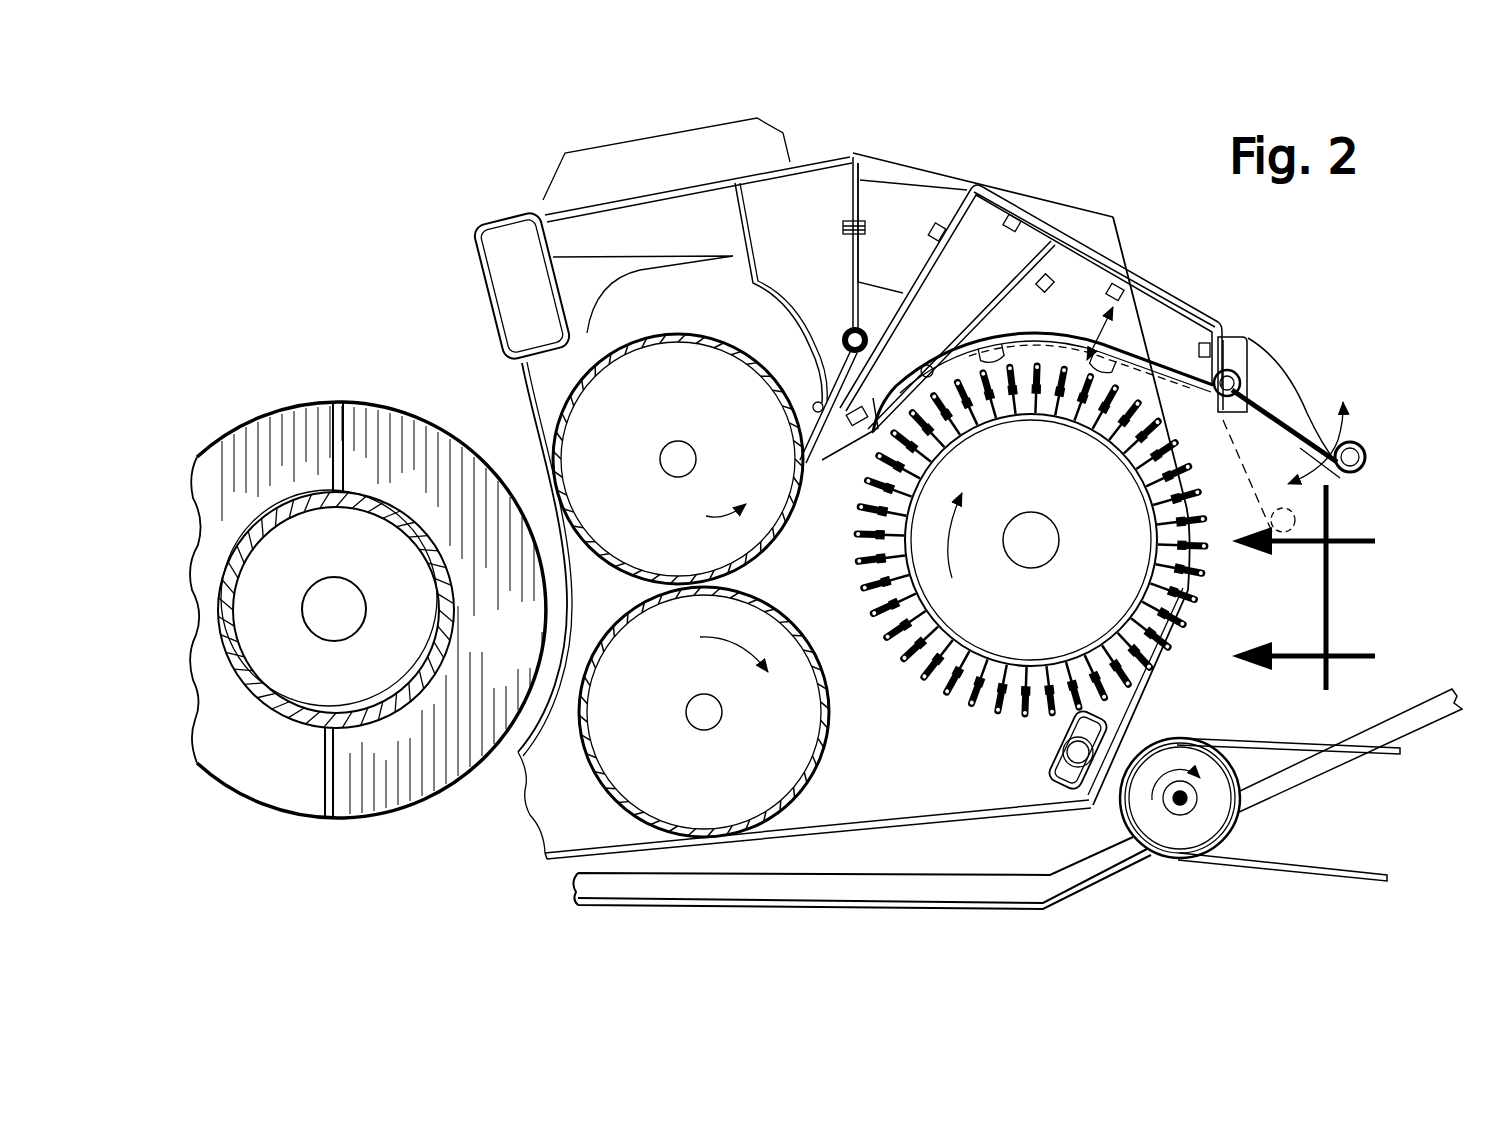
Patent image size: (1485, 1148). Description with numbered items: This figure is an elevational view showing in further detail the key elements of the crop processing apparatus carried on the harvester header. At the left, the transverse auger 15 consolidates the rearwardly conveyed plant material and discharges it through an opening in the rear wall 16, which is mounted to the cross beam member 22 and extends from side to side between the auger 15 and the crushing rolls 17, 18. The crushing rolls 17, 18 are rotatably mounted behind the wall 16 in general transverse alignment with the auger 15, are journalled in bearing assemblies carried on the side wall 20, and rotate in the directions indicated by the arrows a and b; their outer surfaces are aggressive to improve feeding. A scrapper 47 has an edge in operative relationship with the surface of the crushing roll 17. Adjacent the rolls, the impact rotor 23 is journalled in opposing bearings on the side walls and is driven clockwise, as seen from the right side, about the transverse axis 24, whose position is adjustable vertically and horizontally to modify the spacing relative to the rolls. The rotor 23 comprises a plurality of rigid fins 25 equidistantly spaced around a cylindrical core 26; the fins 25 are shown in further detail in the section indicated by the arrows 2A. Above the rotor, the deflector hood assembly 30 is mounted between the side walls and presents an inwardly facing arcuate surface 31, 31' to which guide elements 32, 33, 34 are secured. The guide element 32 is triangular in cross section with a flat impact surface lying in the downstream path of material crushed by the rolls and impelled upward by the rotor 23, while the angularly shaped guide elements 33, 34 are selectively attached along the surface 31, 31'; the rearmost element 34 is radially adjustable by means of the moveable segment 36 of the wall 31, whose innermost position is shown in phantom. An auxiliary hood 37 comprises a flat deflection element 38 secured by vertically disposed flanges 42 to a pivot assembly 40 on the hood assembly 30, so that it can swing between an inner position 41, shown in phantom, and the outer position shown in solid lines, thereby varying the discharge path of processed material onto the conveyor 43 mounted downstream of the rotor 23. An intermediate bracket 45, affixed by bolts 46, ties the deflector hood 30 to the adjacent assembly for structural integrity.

The transverse auger 15 is at (282, 794).
The rear wall 16 is at (527, 410).
The crushing roll 17 is at (696, 334).
The crushing roll 18 is at (800, 800).
The side wall 20 is at (955, 772).
The cross beam member 22 is at (503, 213).
The impact rotor 23 is at (981, 732).
The transverse axis 24 is at (1048, 548).
The rigid fins 25 is at (862, 457).
The cylindrical core 26 is at (1001, 652).
The deflector hood assembly 30 is at (1086, 243).
The inwardly facing arcuate surface 31 is at (1043, 372).
The inwardly facing arcuate surface 31' is at (1135, 346).
The guide element 32 is at (842, 432).
The guide element 33 is at (998, 338).
The guide element 34 is at (1306, 406).
The moveable segment 36 is at (1053, 353).
The auxiliary hood 37 is at (1352, 410).
The deflection element 38 is at (1340, 478).
The pivot assembly 40 is at (1236, 372).
The inner position 41 is at (1306, 528).
The flanges 42 is at (1229, 330).
The conveyor 43 is at (730, 237).
The intermediate brackets 45 is at (905, 200).
The bolts 46 is at (930, 238).
The scrapper 47 is at (808, 454).
The section line 2A is at (1327, 588).